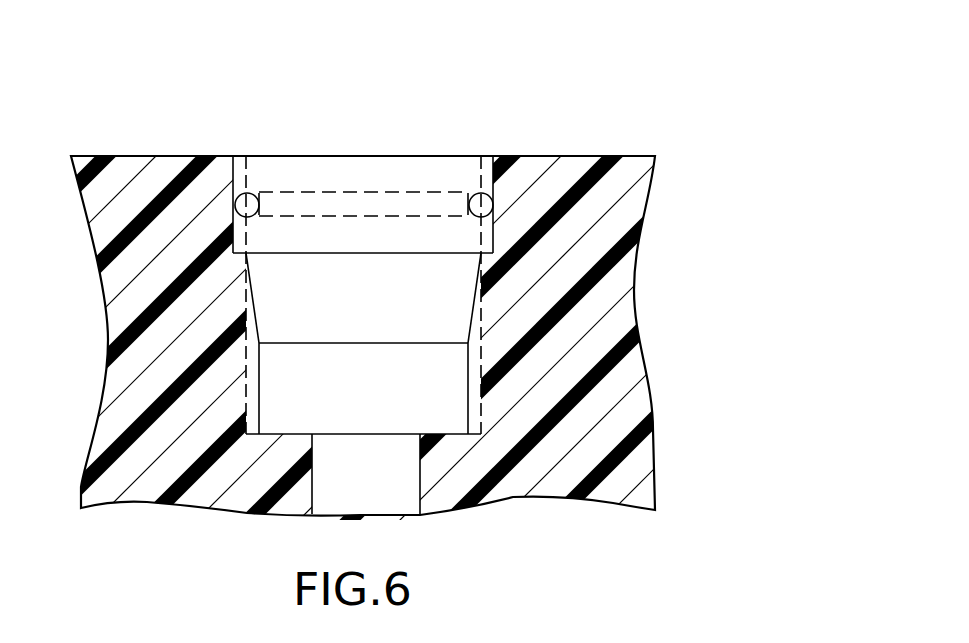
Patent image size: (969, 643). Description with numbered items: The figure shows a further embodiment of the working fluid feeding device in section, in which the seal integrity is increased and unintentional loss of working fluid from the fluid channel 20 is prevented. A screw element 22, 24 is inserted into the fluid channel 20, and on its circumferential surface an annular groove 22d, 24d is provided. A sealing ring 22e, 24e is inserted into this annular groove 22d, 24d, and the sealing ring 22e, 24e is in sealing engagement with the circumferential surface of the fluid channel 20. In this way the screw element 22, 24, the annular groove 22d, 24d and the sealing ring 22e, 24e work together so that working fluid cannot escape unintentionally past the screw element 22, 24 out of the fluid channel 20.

The fluid channel 20 is at (484, 321).
The screw element 22 is at (483, 402).
The screw element 24 is at (483, 333).
The annular groove 22d is at (323, 205).
The annular groove 24d is at (417, 205).
The sealing ring 22e is at (493, 205).
The sealing ring 24e is at (245, 205).